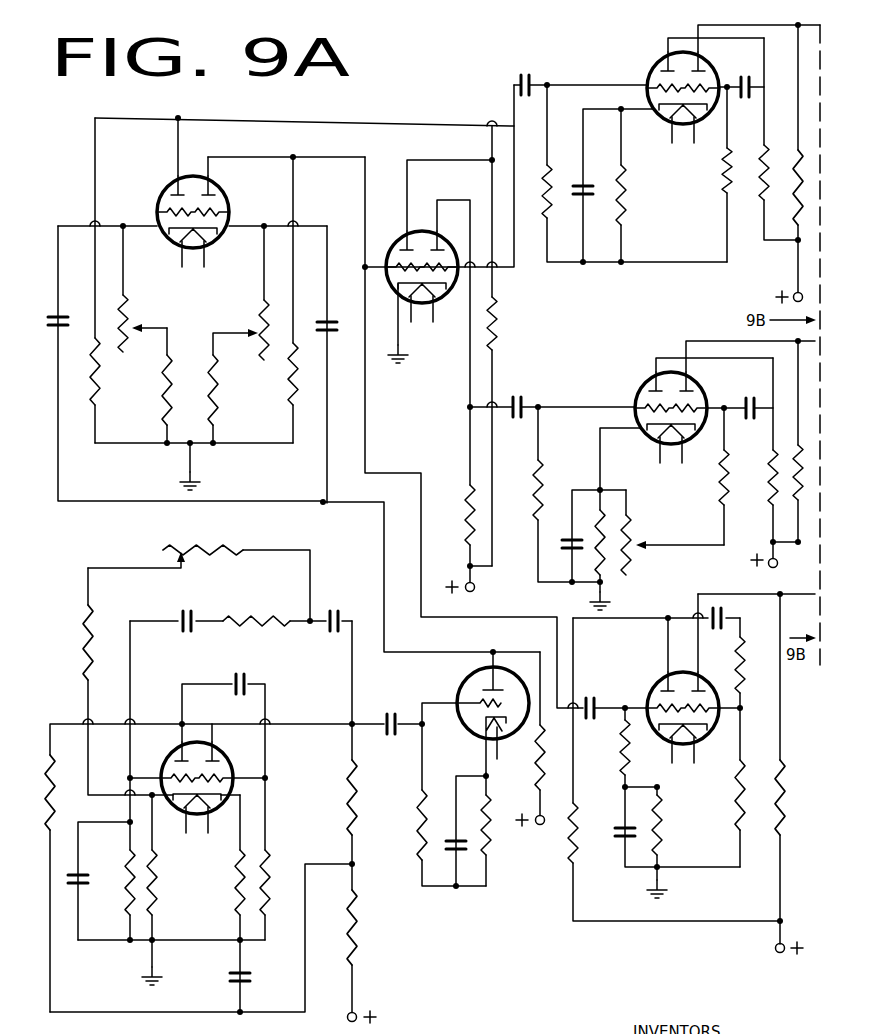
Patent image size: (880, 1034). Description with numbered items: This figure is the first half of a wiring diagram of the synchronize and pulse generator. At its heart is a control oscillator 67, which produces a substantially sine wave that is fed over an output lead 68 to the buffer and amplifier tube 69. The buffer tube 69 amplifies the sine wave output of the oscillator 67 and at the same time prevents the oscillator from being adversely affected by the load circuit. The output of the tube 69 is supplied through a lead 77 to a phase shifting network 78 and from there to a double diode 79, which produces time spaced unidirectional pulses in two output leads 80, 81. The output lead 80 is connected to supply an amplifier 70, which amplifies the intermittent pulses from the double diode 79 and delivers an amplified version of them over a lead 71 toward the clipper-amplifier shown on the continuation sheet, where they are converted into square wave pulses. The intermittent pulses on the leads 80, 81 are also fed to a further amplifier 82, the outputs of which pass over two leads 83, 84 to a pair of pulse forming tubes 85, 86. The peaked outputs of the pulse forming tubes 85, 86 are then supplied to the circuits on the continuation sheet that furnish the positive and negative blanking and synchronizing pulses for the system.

The control oscillator 67 is at (204, 894).
The output lead 68 is at (373, 720).
The buffer and amplifier tube 69 is at (463, 677).
The amplifier 70 is at (653, 682).
The lead 71 is at (797, 588).
The lead 77 is at (380, 553).
The phase shifting network 78 is at (262, 396).
The double diode 79 is at (230, 204).
The output lead 80 is at (320, 160).
The output lead 81 is at (352, 123).
The amplifier 82 is at (393, 237).
The lead 83 is at (458, 160).
The lead 84 is at (450, 204).
The pulse forming tube 85 is at (662, 118).
The pulse forming tube 86 is at (640, 387).